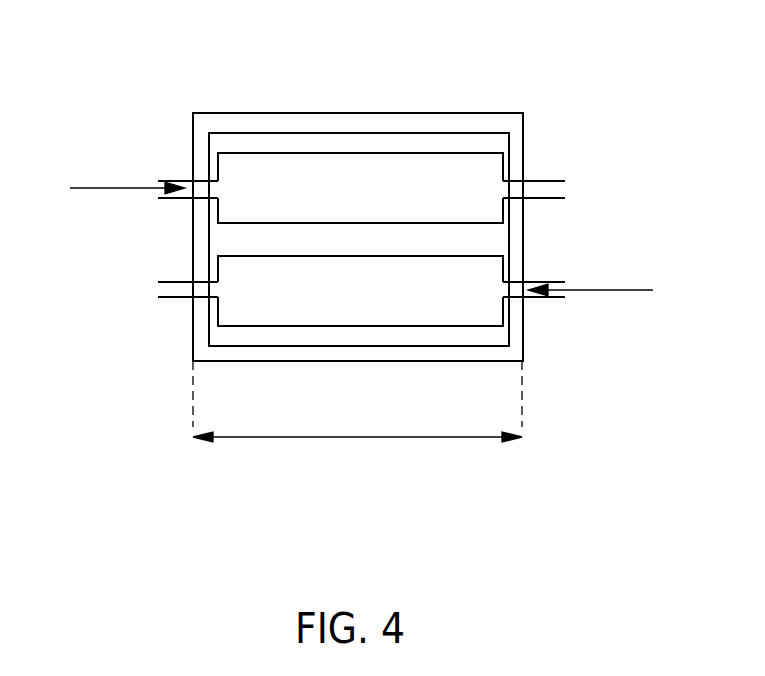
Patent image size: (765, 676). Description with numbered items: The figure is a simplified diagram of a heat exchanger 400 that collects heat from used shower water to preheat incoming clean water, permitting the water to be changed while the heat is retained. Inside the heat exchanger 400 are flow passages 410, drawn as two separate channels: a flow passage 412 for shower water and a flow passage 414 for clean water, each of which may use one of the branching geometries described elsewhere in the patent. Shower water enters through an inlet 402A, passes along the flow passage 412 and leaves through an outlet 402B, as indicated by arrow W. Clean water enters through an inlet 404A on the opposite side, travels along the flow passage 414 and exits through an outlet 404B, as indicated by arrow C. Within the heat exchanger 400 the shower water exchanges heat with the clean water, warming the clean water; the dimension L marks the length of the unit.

The heat exchanger 400 is at (367, 106).
The flow passages 410 is at (482, 133).
The flow passage for shower water 412 is at (377, 198).
The flow passage for clean water 414 is at (377, 301).
The inlet 402A is at (200, 181).
The outlet 402B is at (565, 198).
The inlet 404A is at (513, 297).
The outlet 404B is at (173, 300).